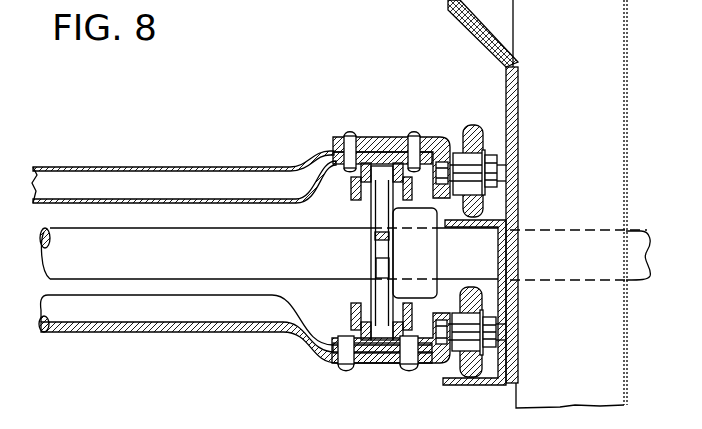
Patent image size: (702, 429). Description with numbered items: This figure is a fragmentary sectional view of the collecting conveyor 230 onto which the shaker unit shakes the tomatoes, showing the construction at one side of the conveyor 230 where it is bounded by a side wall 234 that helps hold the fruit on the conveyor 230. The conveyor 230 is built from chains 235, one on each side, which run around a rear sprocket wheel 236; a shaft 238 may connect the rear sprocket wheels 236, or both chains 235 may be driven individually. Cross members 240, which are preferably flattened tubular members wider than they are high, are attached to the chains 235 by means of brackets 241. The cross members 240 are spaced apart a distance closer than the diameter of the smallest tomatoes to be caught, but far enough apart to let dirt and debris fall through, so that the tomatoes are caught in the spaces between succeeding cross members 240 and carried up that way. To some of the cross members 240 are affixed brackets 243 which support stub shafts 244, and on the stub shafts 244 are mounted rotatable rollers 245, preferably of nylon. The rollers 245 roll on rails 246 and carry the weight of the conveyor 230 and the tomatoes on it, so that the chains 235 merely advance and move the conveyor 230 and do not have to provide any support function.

The conveyor 230 is at (341, 234).
The side walls 234 is at (518, 87).
The chains 235 is at (358, 203).
The rear sprocket wheel 236 is at (370, 232).
The shaft 238 is at (196, 258).
The cross members 240 is at (95, 167).
The brackets 241 is at (349, 172).
The brackets 243 is at (391, 137).
The stub shafts 244 is at (468, 174).
The rollers 245 is at (482, 113).
The rails 246 is at (485, 228).